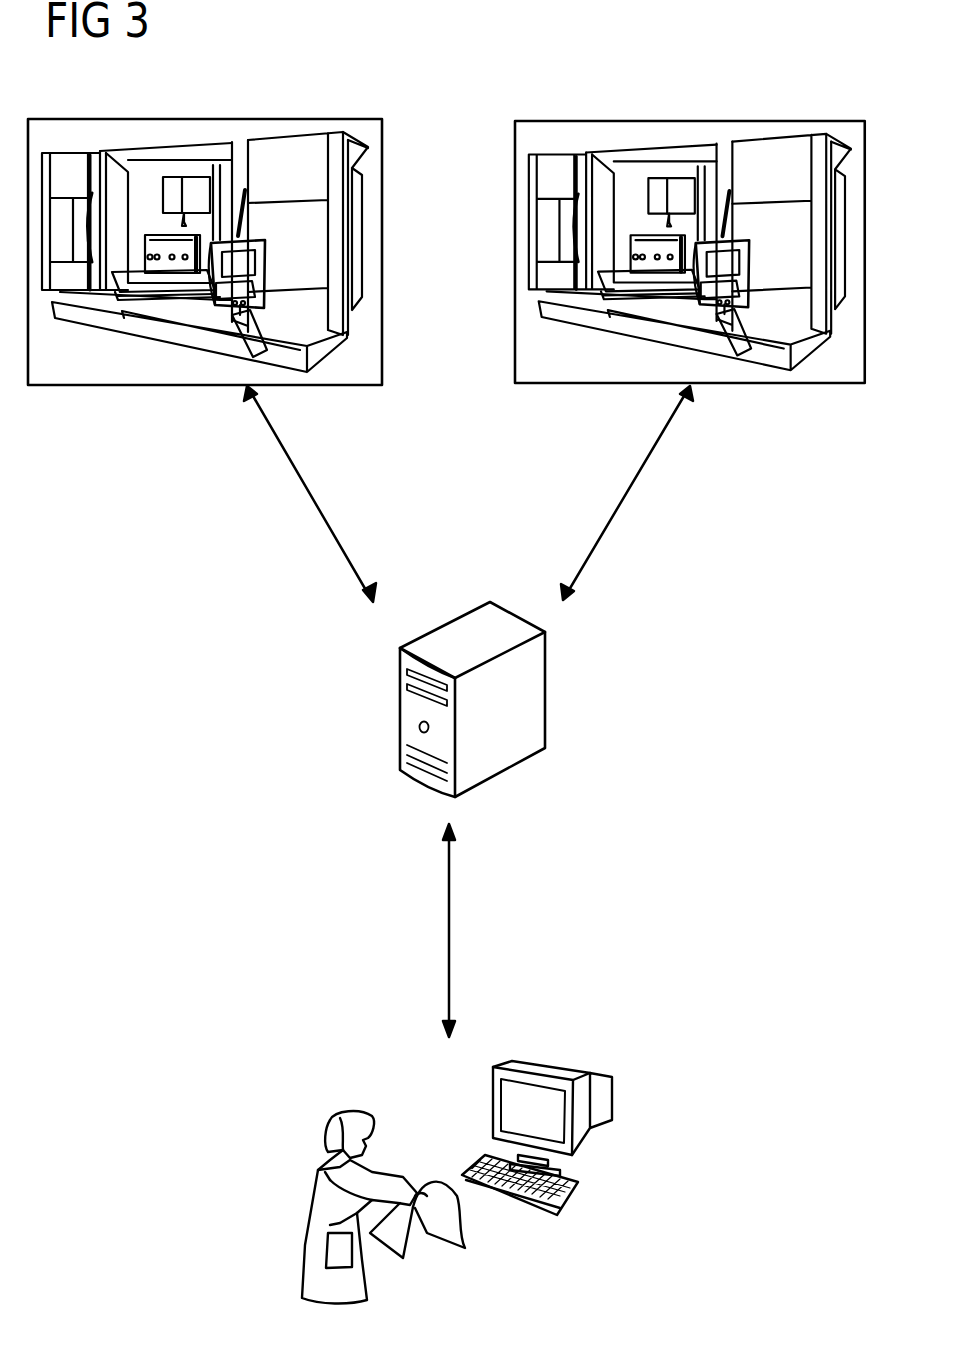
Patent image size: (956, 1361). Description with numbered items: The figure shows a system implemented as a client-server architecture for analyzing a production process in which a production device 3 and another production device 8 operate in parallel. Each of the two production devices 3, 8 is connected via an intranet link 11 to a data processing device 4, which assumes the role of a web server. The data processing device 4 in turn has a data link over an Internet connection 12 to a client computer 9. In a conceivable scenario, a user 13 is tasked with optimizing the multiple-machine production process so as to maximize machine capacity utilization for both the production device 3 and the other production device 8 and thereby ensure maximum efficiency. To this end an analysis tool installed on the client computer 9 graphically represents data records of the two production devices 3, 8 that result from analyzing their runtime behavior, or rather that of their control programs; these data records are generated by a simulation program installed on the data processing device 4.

The production device 3 is at (246, 118).
The other production device 8 is at (689, 121).
The intranet link 11 is at (300, 488).
The data processing device 4 is at (530, 703).
The Internet connection 12 is at (450, 930).
The client computer 9 is at (602, 1102).
The user 13 is at (318, 1197).